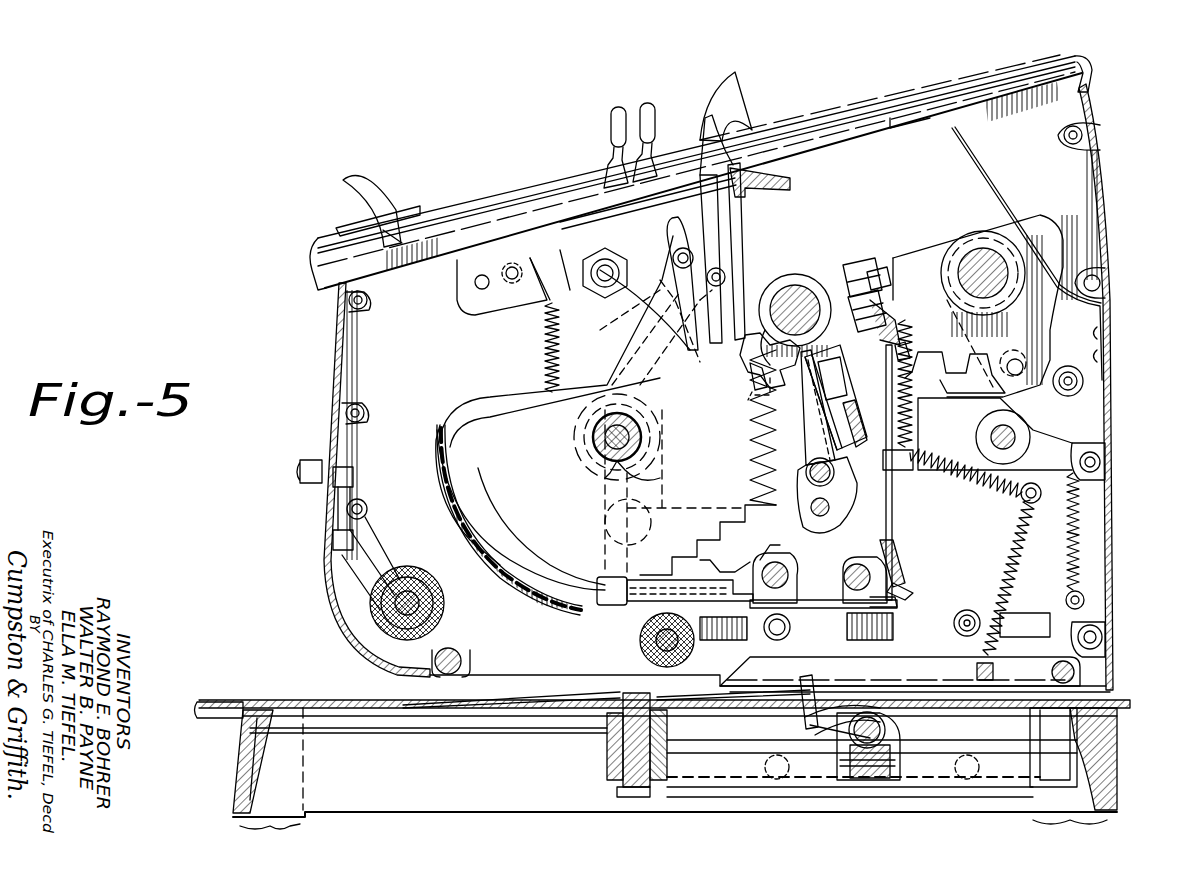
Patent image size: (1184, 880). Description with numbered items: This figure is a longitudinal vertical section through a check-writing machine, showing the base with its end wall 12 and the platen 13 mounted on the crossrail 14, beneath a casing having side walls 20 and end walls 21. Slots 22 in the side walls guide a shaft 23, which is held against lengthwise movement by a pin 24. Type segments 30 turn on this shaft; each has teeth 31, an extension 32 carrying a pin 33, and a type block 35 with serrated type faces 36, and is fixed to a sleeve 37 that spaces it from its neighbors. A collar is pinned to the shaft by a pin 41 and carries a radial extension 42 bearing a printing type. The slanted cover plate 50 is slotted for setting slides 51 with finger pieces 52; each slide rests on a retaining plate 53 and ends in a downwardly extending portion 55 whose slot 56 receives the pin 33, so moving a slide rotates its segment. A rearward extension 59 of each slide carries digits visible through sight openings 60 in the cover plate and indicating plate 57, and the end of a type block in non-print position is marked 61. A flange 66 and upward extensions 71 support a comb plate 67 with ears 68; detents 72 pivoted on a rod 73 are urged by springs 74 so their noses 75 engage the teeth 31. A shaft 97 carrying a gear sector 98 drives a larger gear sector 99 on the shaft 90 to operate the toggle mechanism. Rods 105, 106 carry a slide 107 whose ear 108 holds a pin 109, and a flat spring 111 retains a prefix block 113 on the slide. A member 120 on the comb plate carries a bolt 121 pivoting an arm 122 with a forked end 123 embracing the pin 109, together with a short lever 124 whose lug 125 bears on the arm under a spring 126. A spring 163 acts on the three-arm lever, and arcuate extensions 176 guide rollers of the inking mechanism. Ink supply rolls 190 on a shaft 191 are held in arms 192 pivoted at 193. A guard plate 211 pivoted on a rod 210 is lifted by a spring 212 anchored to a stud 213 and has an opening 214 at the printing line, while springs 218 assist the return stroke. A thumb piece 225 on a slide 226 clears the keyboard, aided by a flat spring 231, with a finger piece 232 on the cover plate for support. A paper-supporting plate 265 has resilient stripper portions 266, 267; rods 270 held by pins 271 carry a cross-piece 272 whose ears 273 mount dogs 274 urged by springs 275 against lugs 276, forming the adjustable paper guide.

The end wall 12 is at (1112, 715).
The platen 13 is at (660, 728).
The crossrail 14 is at (607, 755).
The side wall 20 is at (795, 158).
The end wall 21 is at (336, 378).
The slot 22 is at (650, 473).
The shaft 23 is at (592, 442).
The pin 24 is at (592, 424).
The type segment 30 is at (495, 398).
The teeth 31 is at (757, 455).
The extension 32 is at (640, 368).
The pin 33 is at (672, 312).
The type block 35 is at (523, 557).
The type face 36 is at (443, 523).
The sleeve 37 is at (640, 418).
The pin 41 is at (662, 433).
The radial extension 42 is at (700, 556).
The cover plate 50 is at (936, 86).
The setting slide 51 is at (612, 152).
The finger piece 52 is at (647, 100).
The retaining plate 53 is at (483, 220).
The downwardly extending portion 55 is at (655, 250).
The slot 56 is at (640, 240).
The indicating plate 57 is at (435, 218).
The rearward extension 59 is at (868, 122).
The sight opening 60 is at (703, 118).
The end of type block 61 is at (596, 590).
The rearward flange 66 is at (695, 520).
The comb plate 67 is at (858, 425).
The ear 68 is at (838, 515).
The upward extension 71 is at (836, 397).
The spring detent 72 is at (770, 364).
The rod 73 is at (807, 478).
The spring 74 is at (803, 450).
The nose 75 is at (750, 385).
The shaft 90 is at (975, 250).
The shaft 97 is at (801, 286).
The gear sector 98 is at (852, 272).
The gear sector 99 is at (892, 260).
The rod 105 is at (779, 568).
The rod 106 is at (848, 572).
The slide 107 is at (843, 610).
The ear 108 is at (954, 623).
The pin 109 is at (910, 566).
The flat spring 111 is at (772, 565).
The prefix block 113 is at (603, 580).
The member 120 is at (871, 388).
The bolt 121 is at (891, 276).
The arm 122 is at (894, 490).
The forked end 123 is at (905, 584).
The short lever 124 is at (903, 320).
The lug 125 is at (912, 340).
The spring 126 is at (928, 368).
The spring 163 is at (1080, 520).
The arcuate extension 176 is at (437, 432).
The ink supply roll 190 is at (446, 617).
The shaft 191 is at (378, 622).
The arm 192 is at (398, 543).
The pivot 193 is at (367, 507).
The rod 210 is at (1052, 671).
The guard plate 211 is at (893, 682).
The spring 212 is at (1030, 545).
The stud 213 is at (1022, 507).
The opening 214 is at (643, 676).
The spring 218 is at (957, 487).
The thumb piece 225 is at (357, 224).
The slide 226 is at (600, 228).
The flat spring 231 is at (970, 137).
The finger piece 232 is at (738, 95).
The paper-supporting plate 265 is at (398, 710).
The resilient portion 266 is at (525, 696).
The resilient portion 267 is at (690, 697).
The rod 270 is at (945, 745).
The pin 271 is at (1080, 735).
The cross-piece 272 is at (870, 782).
The ear 273 is at (882, 720).
The dog 274 is at (808, 717).
The spring 275 is at (830, 698).
The lug 276 is at (838, 765).